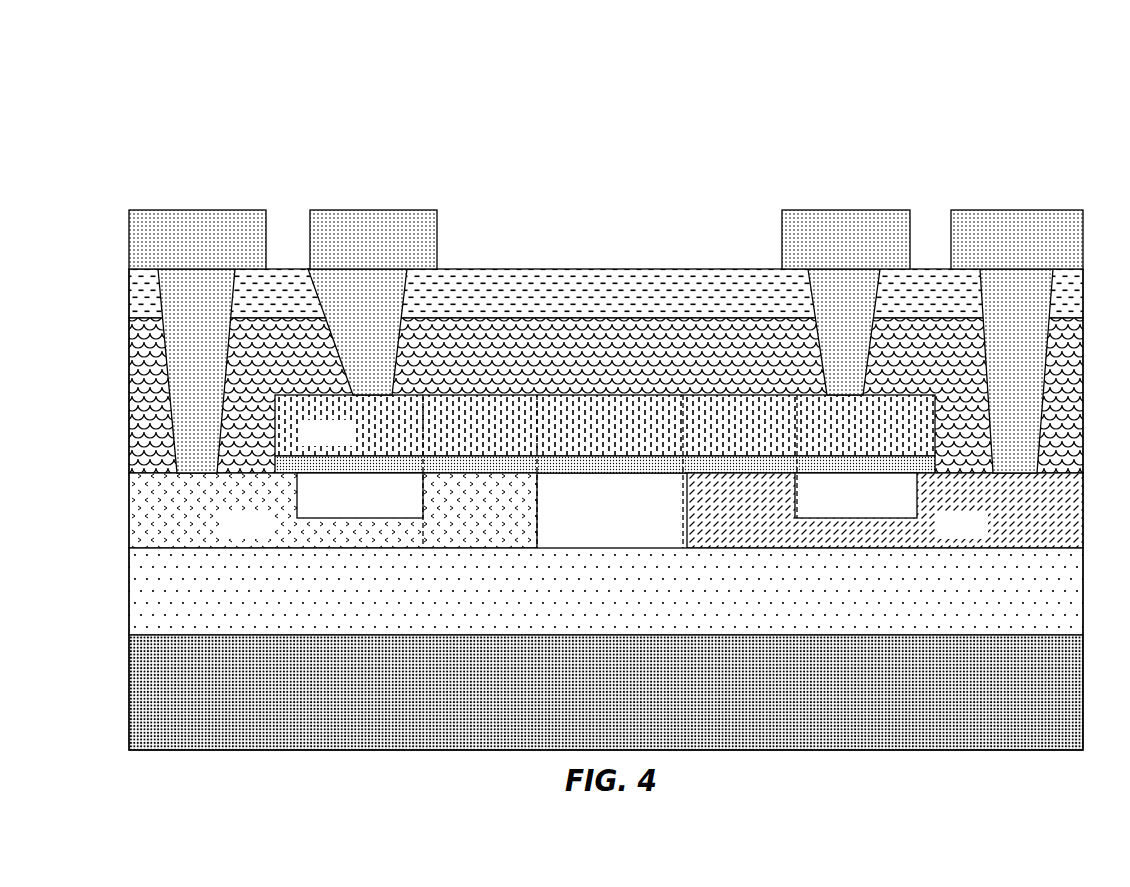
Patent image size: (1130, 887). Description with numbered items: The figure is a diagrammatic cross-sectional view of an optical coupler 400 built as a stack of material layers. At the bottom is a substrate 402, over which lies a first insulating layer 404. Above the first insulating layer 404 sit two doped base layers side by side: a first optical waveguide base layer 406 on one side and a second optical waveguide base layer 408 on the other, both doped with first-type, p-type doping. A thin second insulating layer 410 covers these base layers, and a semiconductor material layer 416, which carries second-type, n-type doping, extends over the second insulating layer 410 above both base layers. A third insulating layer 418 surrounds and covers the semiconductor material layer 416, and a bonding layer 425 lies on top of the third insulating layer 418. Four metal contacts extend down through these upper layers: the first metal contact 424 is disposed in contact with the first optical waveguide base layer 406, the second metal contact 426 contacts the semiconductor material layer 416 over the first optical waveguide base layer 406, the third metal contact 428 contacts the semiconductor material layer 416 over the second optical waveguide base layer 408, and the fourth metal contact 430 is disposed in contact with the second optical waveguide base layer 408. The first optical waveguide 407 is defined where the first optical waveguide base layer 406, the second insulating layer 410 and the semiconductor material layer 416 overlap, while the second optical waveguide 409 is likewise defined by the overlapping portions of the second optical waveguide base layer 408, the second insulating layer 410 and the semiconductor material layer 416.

The optical coupler 400 is at (972, 136).
The substrate 402 is at (152, 707).
The first insulating layer 404 is at (152, 606).
The first optical waveguide base layer 406 is at (1016, 506).
The first optical waveguide 407 is at (685, 508).
The second optical waveguide base layer 408 is at (152, 524).
The second optical waveguide 409 is at (537, 520).
The second insulating layer 410 is at (282, 465).
The semiconductor material layer 416 is at (589, 442).
The third insulating layer 418 is at (584, 363).
The first metal contact 424 is at (994, 254).
The bonding layer 425 is at (584, 306).
The second metal contact 426 is at (824, 254).
The third metal contact 428 is at (352, 254).
The fourth metal contact 430 is at (176, 254).